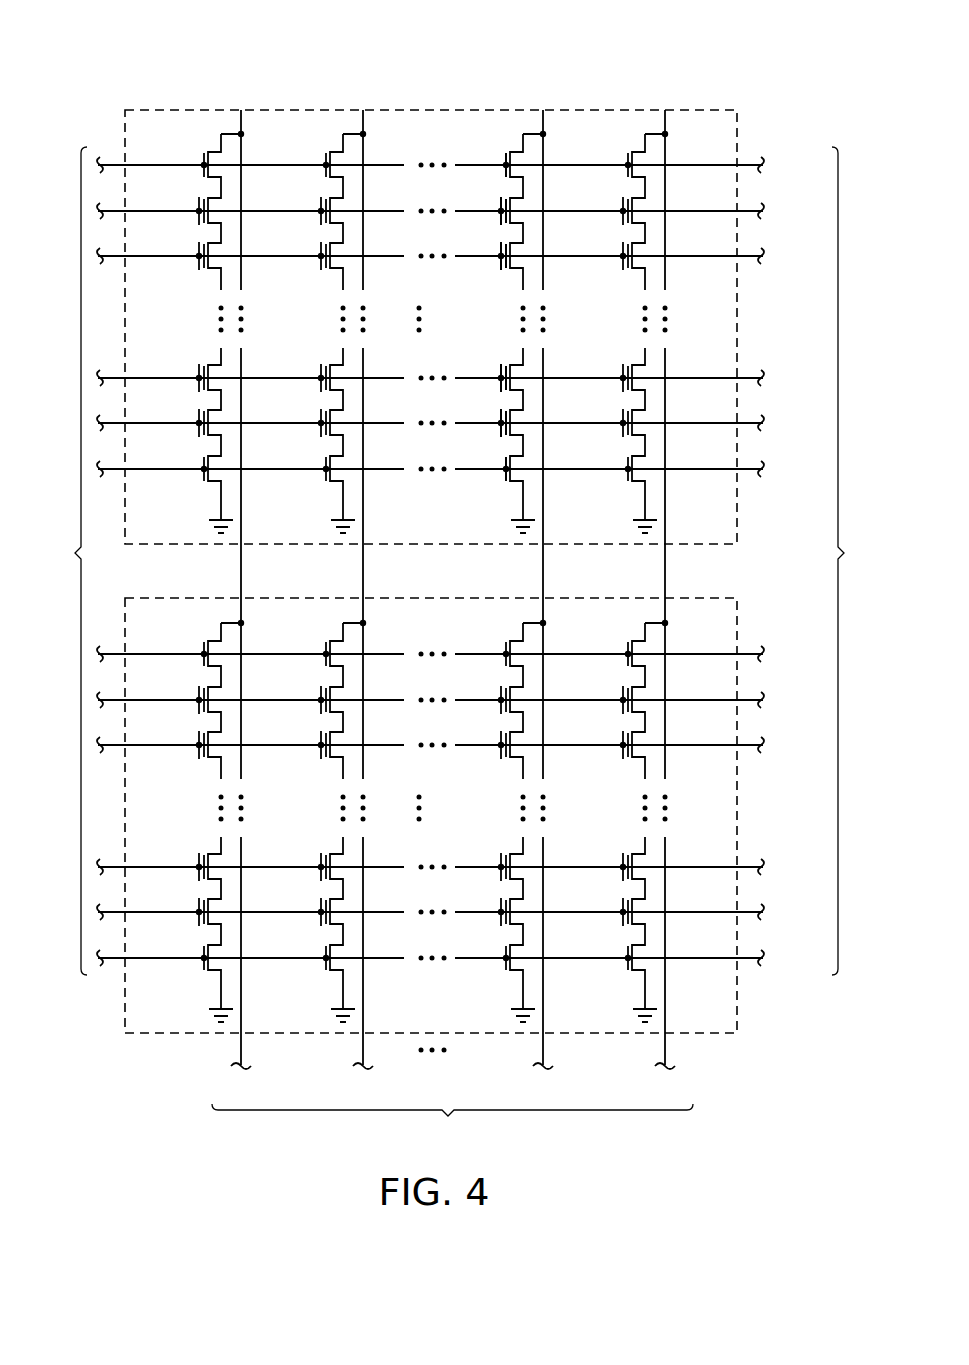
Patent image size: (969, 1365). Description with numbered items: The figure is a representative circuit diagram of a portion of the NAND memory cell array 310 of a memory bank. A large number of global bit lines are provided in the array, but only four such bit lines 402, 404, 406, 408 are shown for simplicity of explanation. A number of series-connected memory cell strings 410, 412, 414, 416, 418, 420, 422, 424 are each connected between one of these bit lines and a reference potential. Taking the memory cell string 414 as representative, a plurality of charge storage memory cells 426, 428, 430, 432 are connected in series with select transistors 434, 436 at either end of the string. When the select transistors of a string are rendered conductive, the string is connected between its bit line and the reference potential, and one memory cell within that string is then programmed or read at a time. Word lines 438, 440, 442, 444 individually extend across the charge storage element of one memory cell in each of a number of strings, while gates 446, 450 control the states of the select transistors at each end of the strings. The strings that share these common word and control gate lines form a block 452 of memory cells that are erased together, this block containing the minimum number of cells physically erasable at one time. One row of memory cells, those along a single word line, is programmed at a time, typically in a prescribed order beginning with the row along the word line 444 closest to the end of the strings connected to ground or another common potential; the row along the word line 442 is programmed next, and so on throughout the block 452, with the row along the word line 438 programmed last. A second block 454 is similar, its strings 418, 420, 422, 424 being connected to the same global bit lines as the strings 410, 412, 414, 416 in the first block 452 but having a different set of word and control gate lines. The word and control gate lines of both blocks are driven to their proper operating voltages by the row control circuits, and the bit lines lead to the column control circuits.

The memory cell array 310 is at (157, 72).
The block 452 is at (407, 100).
The second block 454 is at (520, 1042).
The global bit line 402 is at (242, 152).
The global bit line 404 is at (364, 152).
The global bit line 406 is at (544, 152).
The global bit line 408 is at (667, 152).
The memory cell string 410 is at (205, 352).
The memory cell string 412 is at (327, 352).
The memory cell string 414 is at (510, 352).
The memory cell string 416 is at (630, 352).
The memory cell string 418 is at (205, 841).
The memory cell string 420 is at (327, 841).
The memory cell string 422 is at (510, 841).
The memory cell string 424 is at (630, 841).
The charge storage memory cell 426 is at (503, 203).
The charge storage memory cell 428 is at (503, 248).
The charge storage memory cell 430 is at (501, 370).
The charge storage memory cell 432 is at (501, 416).
The select transistor 434 is at (503, 462).
The select transistor 436 is at (512, 152).
The word line 438 is at (748, 211).
The word line 440 is at (748, 256).
The word line 442 is at (748, 378).
The word line 444 is at (748, 423).
The gate 446 is at (748, 165).
The gate 450 is at (748, 469).